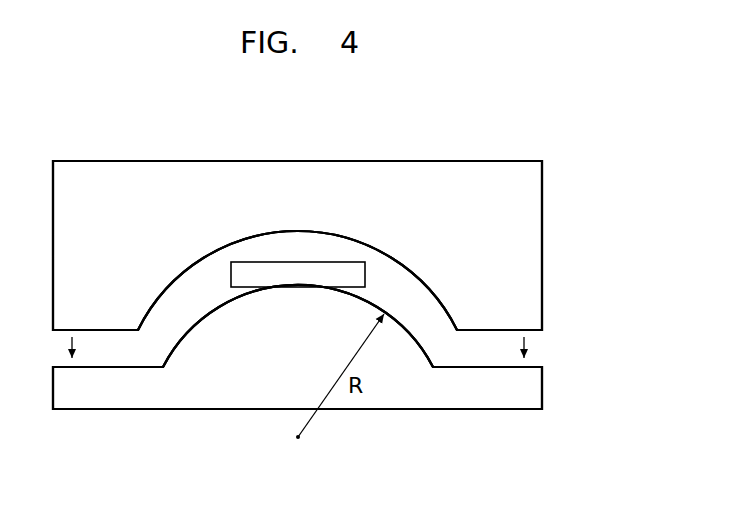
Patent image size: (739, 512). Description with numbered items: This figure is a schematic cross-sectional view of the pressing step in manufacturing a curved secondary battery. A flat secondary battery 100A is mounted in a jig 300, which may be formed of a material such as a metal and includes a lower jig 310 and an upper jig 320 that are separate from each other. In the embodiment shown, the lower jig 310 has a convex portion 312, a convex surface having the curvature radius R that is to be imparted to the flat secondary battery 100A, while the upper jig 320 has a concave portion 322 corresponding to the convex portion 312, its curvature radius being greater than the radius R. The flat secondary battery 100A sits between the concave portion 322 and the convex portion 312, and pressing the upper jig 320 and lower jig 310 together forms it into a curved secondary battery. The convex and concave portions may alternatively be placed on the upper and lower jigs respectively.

The jig 300 is at (638, 242).
The upper jig 320 is at (538, 248).
The lower jig 310 is at (538, 390).
The concave portion 322 is at (416, 281).
The convex portion 312 is at (246, 314).
The flat secondary battery 100A is at (295, 267).